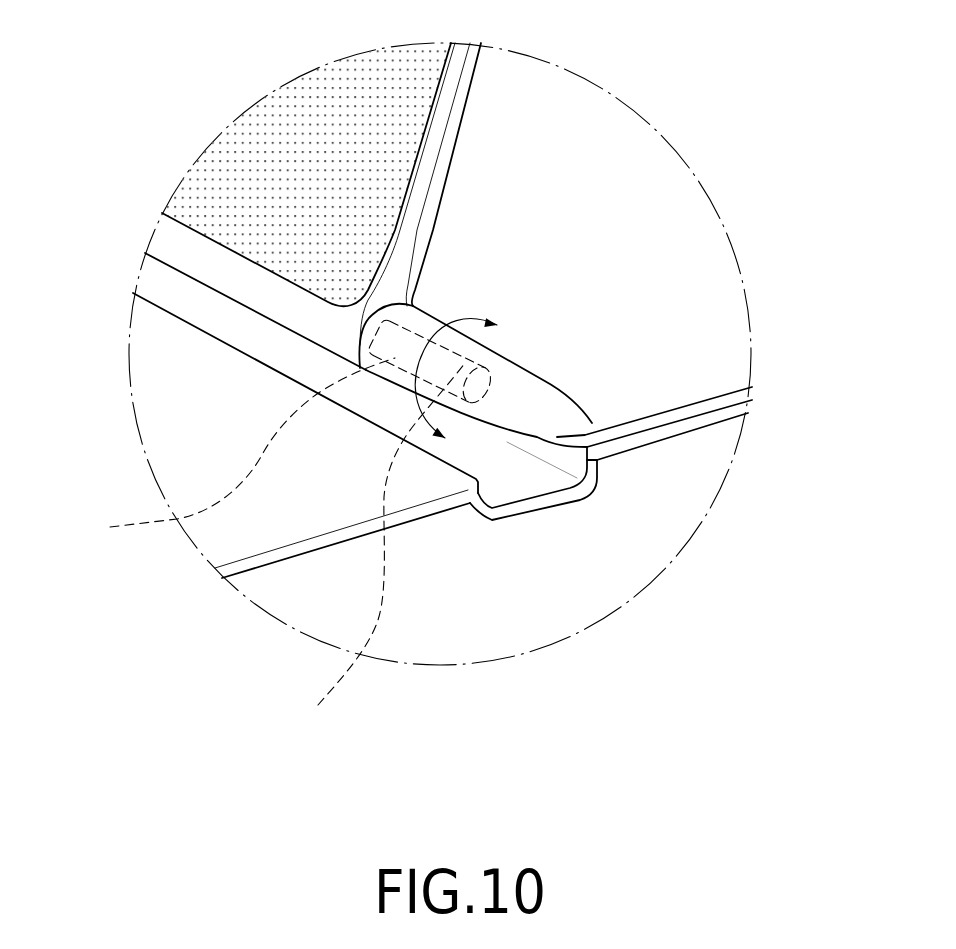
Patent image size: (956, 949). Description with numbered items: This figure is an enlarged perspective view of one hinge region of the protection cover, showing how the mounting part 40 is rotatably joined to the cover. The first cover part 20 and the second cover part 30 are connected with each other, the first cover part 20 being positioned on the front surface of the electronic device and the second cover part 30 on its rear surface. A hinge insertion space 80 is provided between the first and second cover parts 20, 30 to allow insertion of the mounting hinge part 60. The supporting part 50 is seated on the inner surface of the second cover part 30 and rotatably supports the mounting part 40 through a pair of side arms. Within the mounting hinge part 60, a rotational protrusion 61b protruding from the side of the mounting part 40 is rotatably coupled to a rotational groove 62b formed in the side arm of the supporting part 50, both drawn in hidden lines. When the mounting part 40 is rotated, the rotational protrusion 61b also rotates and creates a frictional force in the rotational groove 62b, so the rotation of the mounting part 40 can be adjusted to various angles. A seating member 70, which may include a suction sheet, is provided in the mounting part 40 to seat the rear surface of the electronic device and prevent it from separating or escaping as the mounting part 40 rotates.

The first cover part 20 is at (153, 362).
The second cover part 30 is at (650, 433).
The mounting part 40 is at (468, 90).
The supporting part 50 is at (613, 162).
The mounting hinge part 60 is at (547, 380).
The rotational protrusion 61b is at (230, 448).
The rotational groove 62b is at (381, 550).
The seating member 70 is at (293, 117).
The hinge insertion space 80 is at (518, 472).